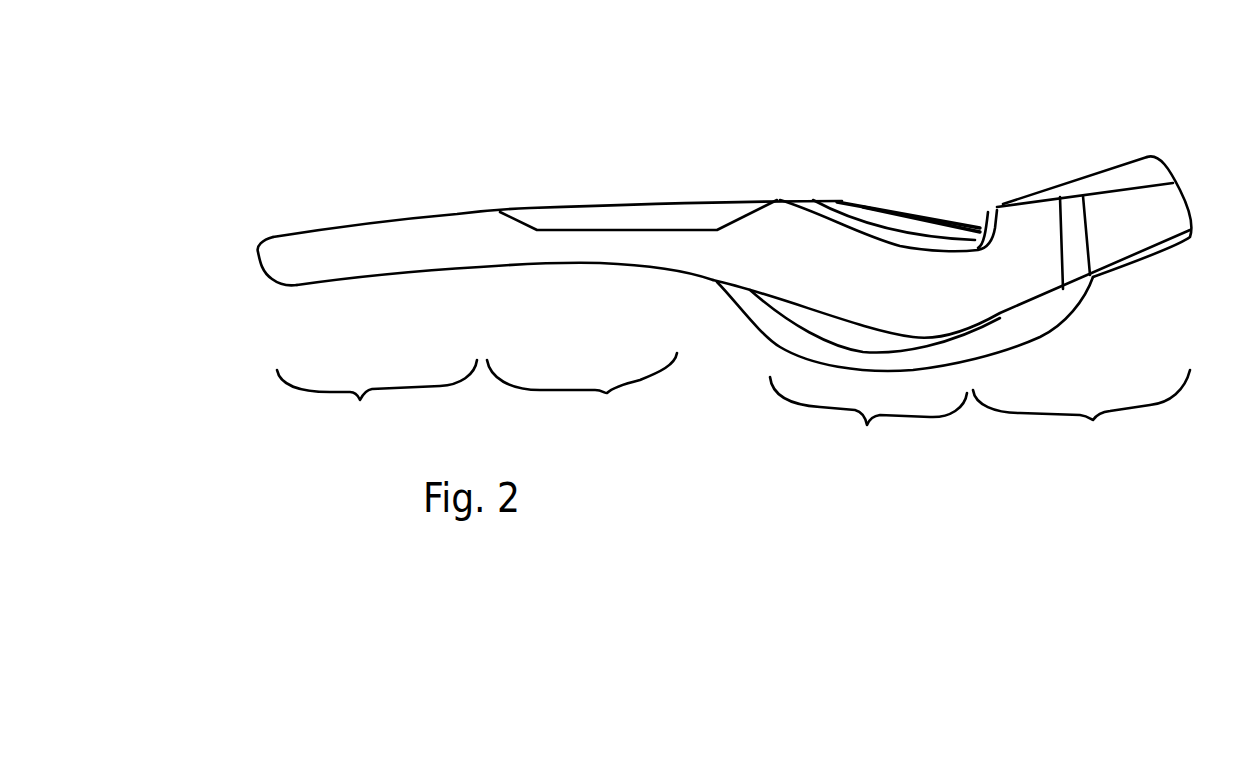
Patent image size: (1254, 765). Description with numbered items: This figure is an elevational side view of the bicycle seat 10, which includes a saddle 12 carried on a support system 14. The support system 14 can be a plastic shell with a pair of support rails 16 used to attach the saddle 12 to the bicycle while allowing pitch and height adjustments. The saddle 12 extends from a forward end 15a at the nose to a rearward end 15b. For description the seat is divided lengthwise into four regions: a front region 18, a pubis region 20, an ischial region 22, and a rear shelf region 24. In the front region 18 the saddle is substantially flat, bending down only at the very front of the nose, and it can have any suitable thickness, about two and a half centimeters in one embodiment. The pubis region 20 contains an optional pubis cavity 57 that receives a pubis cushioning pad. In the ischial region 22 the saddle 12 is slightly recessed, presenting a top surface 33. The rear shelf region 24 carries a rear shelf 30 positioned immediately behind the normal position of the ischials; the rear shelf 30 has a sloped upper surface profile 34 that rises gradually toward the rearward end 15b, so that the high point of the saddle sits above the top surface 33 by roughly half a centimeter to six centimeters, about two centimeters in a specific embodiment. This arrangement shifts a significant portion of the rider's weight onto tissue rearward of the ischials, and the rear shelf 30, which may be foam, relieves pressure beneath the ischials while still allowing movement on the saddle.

The bicycle seat 10 is at (676, 71).
The saddle 12 is at (459, 213).
The support system 14 is at (664, 316).
The forward end 15a is at (272, 238).
The rearward end 15b is at (1197, 213).
The support rails 16 is at (801, 350).
The front region 18 is at (377, 398).
The pubis region 20 is at (582, 395).
The ischial region 22 is at (868, 418).
The rear shelf region 24 is at (1081, 409).
The rear shelf 30 is at (1038, 141).
The top surface 33 is at (962, 216).
The sloped upper surface profile 34 is at (1087, 171).
The pubis cavity 57 is at (616, 213).